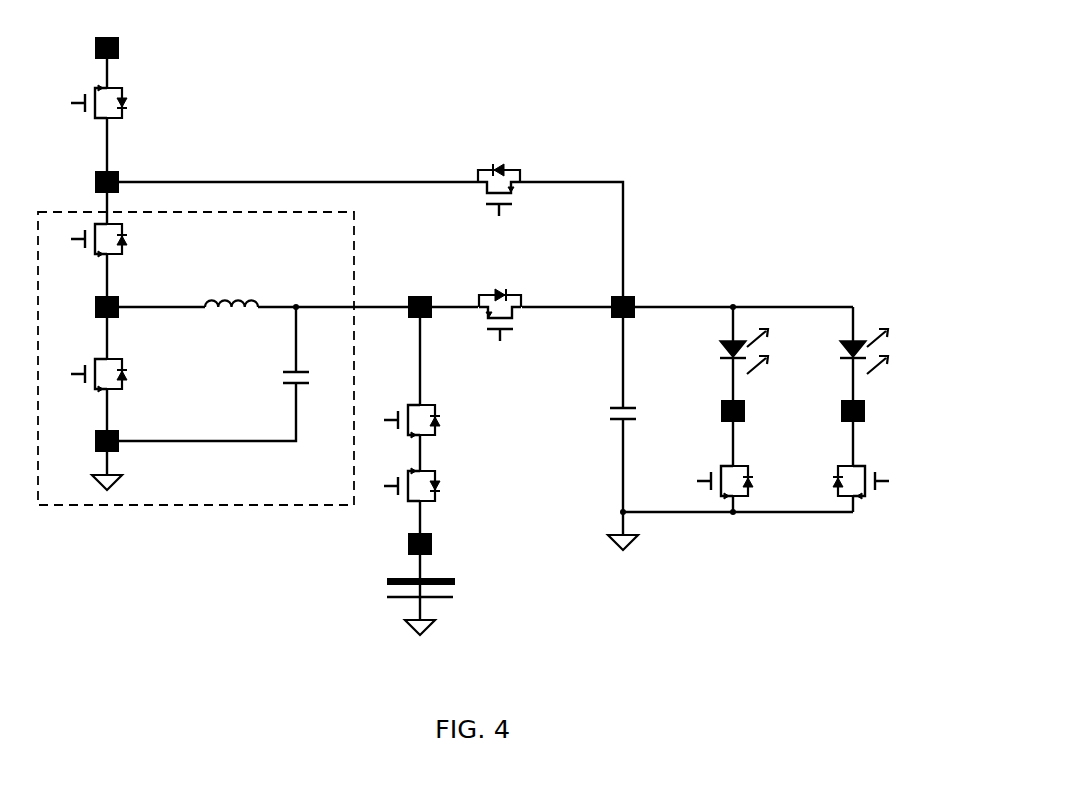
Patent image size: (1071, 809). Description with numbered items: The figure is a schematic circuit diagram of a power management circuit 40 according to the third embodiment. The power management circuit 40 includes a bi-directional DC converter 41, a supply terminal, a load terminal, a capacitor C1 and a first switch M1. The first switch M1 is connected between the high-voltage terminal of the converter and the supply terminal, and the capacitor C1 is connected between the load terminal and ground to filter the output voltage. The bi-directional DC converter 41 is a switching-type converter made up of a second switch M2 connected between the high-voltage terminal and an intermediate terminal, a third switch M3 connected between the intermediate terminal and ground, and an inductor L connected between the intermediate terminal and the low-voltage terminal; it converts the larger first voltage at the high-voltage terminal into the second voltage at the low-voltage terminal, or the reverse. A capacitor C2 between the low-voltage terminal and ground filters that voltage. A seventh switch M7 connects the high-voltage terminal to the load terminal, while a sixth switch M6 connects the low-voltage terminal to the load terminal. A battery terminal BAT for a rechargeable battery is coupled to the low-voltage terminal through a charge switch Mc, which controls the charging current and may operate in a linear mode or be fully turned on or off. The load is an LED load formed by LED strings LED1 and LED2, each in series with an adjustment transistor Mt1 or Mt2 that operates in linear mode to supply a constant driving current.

The power management circuit 40 is at (847, 93).
The bi-directional DC converter 41 is at (80, 507).
The first switch M1 is at (126, 101).
The second switch M2 is at (126, 240).
The third switch M3 is at (126, 375).
The sixth switch M6 is at (500, 298).
The seventh switch M7 is at (499, 169).
The charge switch Mc is at (445, 453).
The inductor L is at (231, 284).
The capacitor C1 is at (643, 426).
The capacitor C2 is at (214, 374).
The battery terminal BAT is at (452, 564).
The LED string LED1 is at (771, 376).
The LED string LED2 is at (893, 376).
The adjustment transistor Mt1 is at (754, 482).
The adjustment transistor Mt2 is at (890, 482).